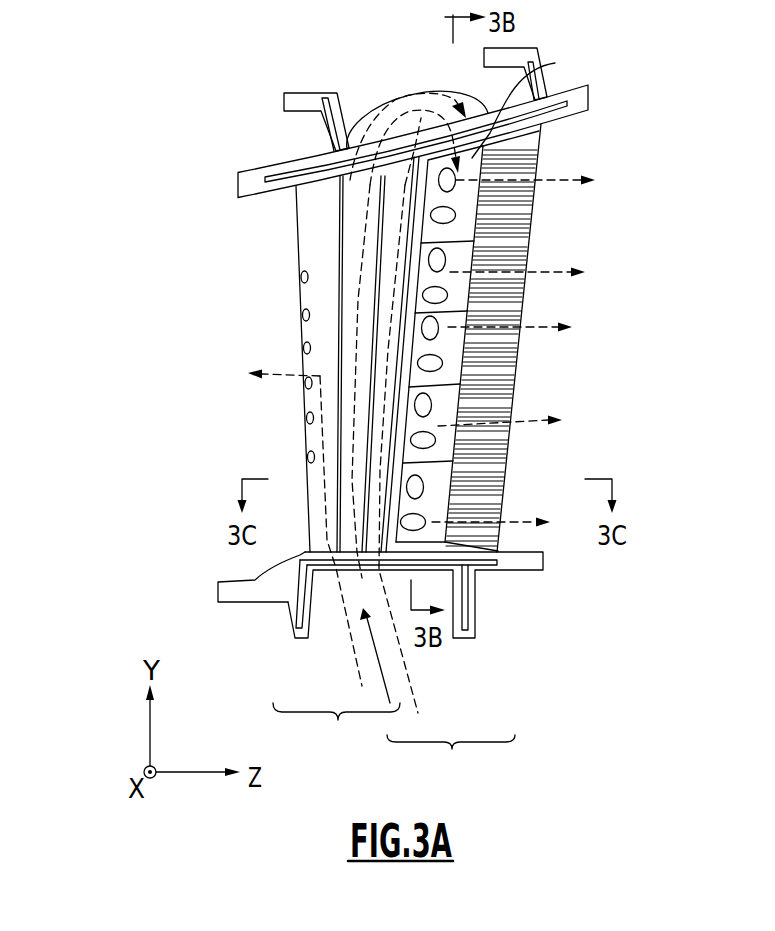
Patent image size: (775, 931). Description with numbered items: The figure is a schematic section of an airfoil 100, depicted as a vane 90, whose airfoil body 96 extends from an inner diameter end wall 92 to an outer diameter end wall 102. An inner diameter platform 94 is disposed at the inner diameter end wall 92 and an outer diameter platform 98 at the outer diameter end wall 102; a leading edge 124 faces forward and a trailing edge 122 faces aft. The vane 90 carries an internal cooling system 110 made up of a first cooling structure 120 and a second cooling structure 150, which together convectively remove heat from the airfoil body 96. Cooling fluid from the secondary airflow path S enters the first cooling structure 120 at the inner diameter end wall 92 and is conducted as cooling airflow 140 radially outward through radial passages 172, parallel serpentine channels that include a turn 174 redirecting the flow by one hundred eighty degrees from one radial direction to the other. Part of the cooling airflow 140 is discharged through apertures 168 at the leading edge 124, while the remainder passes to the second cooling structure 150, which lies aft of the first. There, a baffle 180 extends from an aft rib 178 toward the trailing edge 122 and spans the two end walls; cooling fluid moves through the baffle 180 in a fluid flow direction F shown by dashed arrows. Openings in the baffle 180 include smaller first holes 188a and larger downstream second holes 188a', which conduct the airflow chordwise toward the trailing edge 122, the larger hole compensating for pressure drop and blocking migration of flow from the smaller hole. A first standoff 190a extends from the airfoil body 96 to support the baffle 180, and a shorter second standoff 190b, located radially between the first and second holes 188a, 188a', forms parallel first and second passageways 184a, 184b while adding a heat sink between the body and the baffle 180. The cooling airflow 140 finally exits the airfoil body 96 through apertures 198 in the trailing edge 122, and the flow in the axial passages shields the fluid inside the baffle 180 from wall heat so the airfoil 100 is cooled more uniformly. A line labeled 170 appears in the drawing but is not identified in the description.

The airfoil 100 is at (120, 95).
The vane 90 is at (180, 143).
The outer diameter platform 98 is at (253, 182).
The outer diameter end wall 102 is at (310, 192).
The turn 174 is at (372, 108).
The cooling airflow 140 is at (416, 100).
The fluid flow direction F is at (523, 105).
The airfoil body 96 is at (398, 217).
The baffle wall 170 is at (345, 222).
The aft rib 178 is at (402, 312).
The radial passages 172 is at (347, 257).
The apertures 168 is at (307, 457).
The baffle 180 is at (500, 163).
The apertures 198 is at (530, 197).
The first passageway 184a is at (440, 412).
The second passageway 184b is at (442, 452).
The first holes 188a is at (521, 253).
The second holes 188a' is at (566, 234).
The first standoff 190a is at (447, 297).
The second standoff 190b is at (440, 332).
The inner diameter platform 94 is at (525, 562).
The leading edge 124 is at (305, 542).
The trailing edge 122 is at (510, 543).
The inner diameter end wall 92 is at (318, 540).
The secondary airflow path S is at (347, 627).
The first cooling structure 120 is at (336, 732).
The second cooling structure 150 is at (451, 764).
The internal cooling system 110 is at (545, 752).